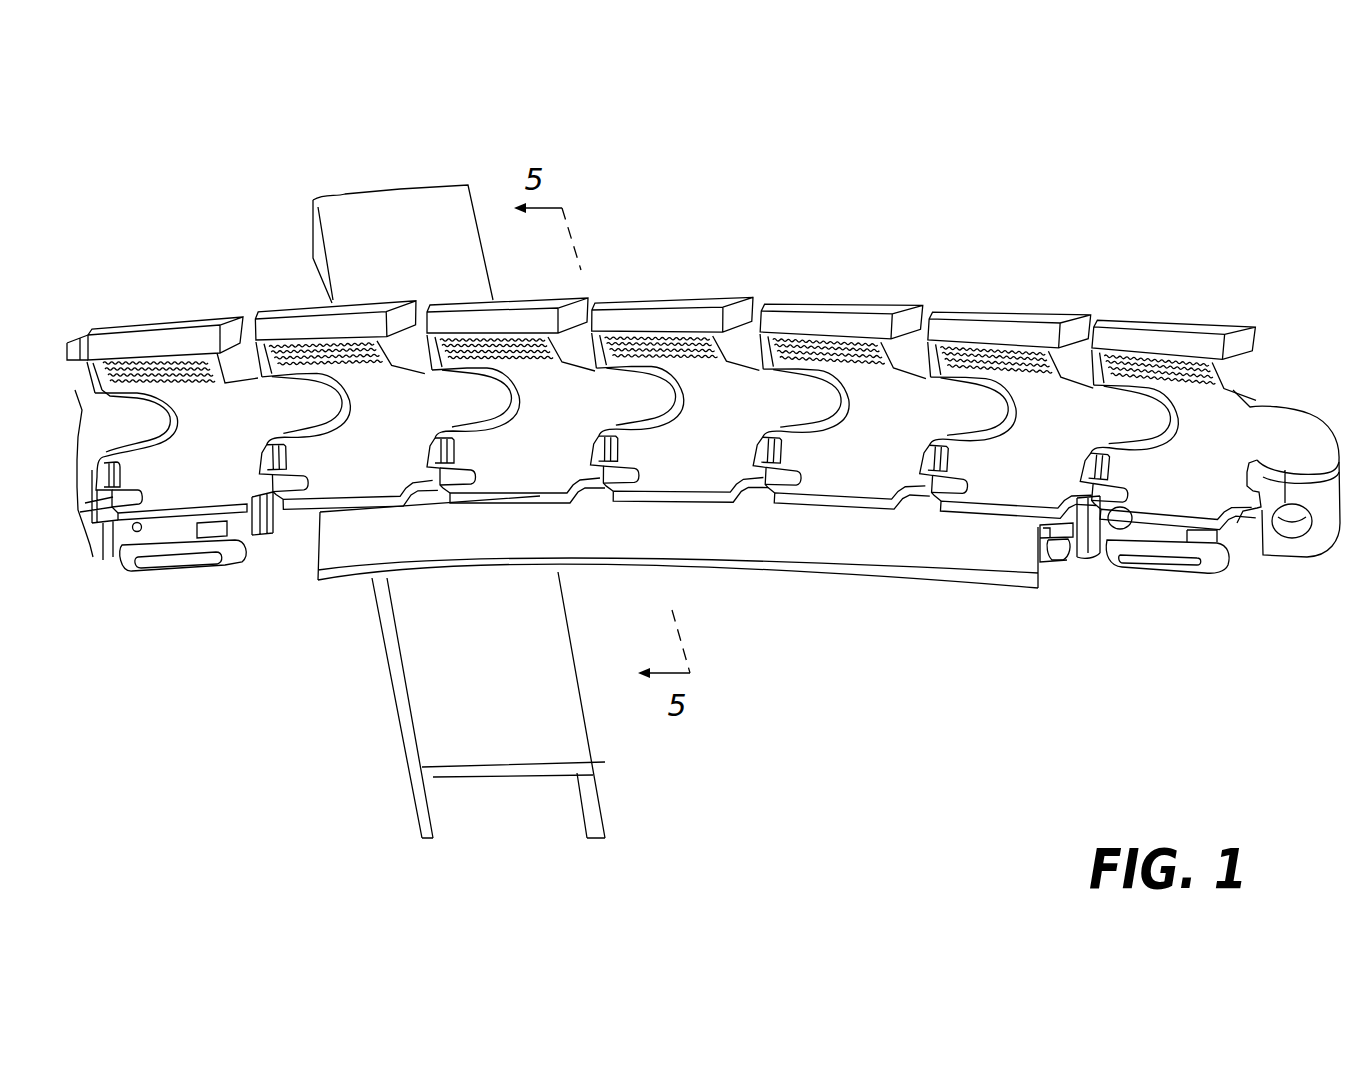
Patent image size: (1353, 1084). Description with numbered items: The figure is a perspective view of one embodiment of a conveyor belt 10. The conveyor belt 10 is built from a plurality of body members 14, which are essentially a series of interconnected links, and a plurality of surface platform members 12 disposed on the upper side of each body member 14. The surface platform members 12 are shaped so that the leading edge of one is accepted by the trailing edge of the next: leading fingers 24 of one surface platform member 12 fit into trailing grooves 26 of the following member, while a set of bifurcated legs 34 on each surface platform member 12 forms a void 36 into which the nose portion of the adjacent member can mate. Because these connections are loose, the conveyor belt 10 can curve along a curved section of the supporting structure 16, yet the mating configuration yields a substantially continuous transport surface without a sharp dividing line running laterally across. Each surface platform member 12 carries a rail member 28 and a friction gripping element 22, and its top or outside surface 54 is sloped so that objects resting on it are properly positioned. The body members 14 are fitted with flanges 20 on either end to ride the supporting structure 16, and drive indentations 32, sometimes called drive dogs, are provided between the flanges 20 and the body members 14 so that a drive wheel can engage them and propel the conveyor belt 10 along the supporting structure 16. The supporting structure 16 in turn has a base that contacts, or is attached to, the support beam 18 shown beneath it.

The conveyor belt 10 is at (142, 133).
The surface platform member 12 is at (702, 382).
The body member 14 is at (1272, 550).
The supporting structure 16 is at (873, 540).
The support beam 18 is at (458, 714).
The flange 20 is at (175, 553).
The friction gripping element 22 is at (146, 340).
The leading fingers 24 is at (1080, 492).
The trailing grooves 26 is at (1122, 523).
The rail member 28 is at (1000, 345).
The drive indentations 32 is at (259, 566).
The bifurcated legs 34 is at (337, 450).
The void 36 is at (1177, 420).
The outside surface 54 is at (1060, 458).